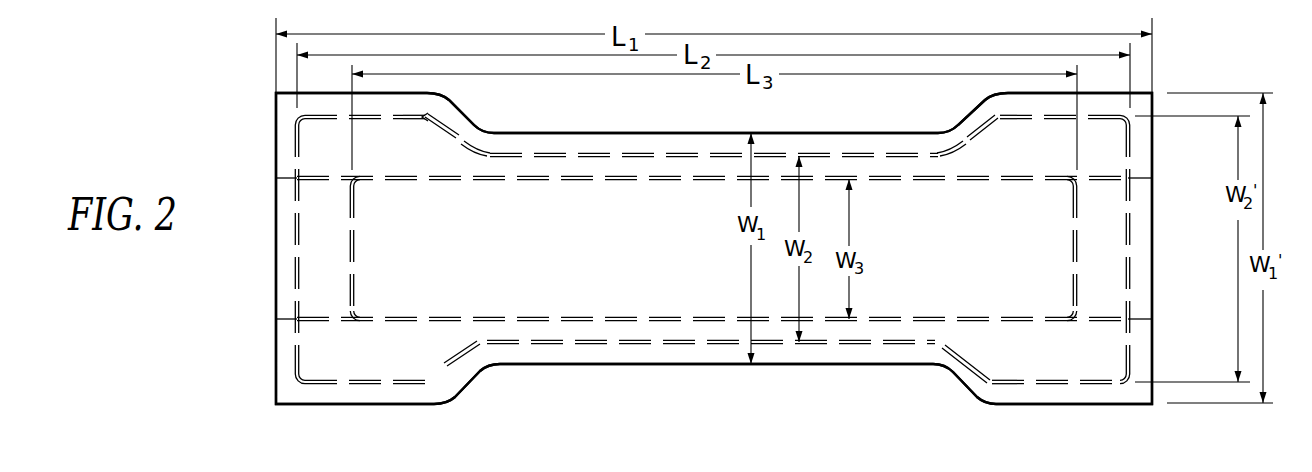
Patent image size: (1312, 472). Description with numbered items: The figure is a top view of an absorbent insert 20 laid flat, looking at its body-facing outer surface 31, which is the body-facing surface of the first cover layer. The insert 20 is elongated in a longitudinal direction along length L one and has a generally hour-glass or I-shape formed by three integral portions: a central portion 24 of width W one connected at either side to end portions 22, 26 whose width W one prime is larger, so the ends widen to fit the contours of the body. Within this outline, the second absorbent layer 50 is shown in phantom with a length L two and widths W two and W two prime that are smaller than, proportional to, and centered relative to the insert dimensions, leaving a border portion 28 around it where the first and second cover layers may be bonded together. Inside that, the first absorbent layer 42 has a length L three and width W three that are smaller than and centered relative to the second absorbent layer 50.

The absorbent insert 20 is at (226, 109).
The end portion 22 is at (371, 104).
The central portion 24 is at (636, 143).
The end portion 26 is at (1042, 105).
The border portion 28 is at (877, 352).
The body-facing outer surface 31 is at (625, 352).
The first absorbent layer 42 is at (561, 136).
The second absorbent layer 50 is at (486, 111).